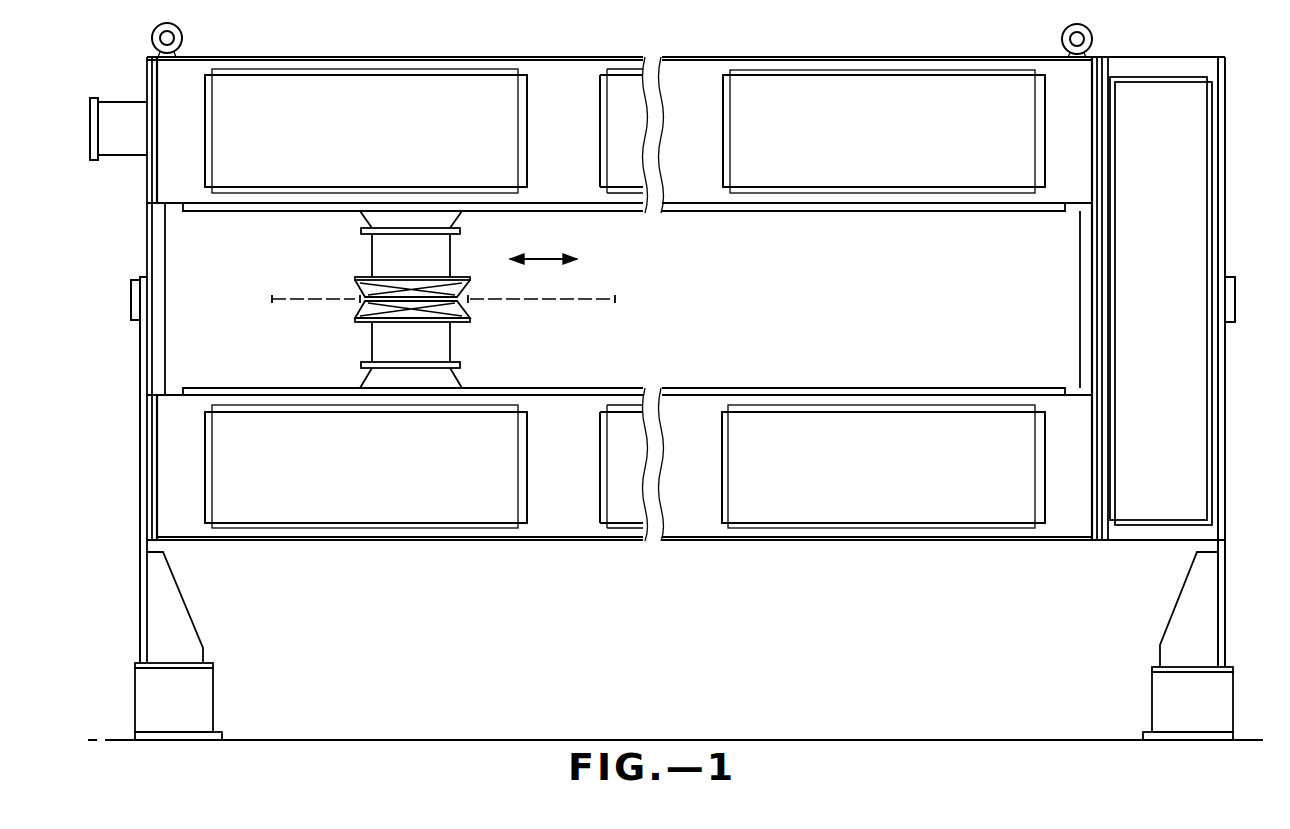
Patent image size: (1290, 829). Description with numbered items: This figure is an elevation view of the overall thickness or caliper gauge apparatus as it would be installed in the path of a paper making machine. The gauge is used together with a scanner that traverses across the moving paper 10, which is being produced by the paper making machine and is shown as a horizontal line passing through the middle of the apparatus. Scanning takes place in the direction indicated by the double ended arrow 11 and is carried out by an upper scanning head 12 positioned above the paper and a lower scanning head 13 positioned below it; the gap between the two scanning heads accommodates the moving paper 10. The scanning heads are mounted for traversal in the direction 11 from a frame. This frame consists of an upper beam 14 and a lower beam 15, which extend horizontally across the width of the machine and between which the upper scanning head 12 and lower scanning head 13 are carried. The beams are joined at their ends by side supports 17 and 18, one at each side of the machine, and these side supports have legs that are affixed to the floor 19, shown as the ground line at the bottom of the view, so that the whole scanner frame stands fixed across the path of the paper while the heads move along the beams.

The moving paper 10 is at (562, 300).
The double ended arrow 11 is at (544, 258).
The upper scanning head 12 is at (378, 256).
The lower scanning head 13 is at (380, 340).
The upper beam 14 is at (779, 58).
The lower beam 15 is at (820, 387).
The side support 17 is at (147, 400).
The side support 18 is at (1225, 248).
The floor 19 is at (362, 740).